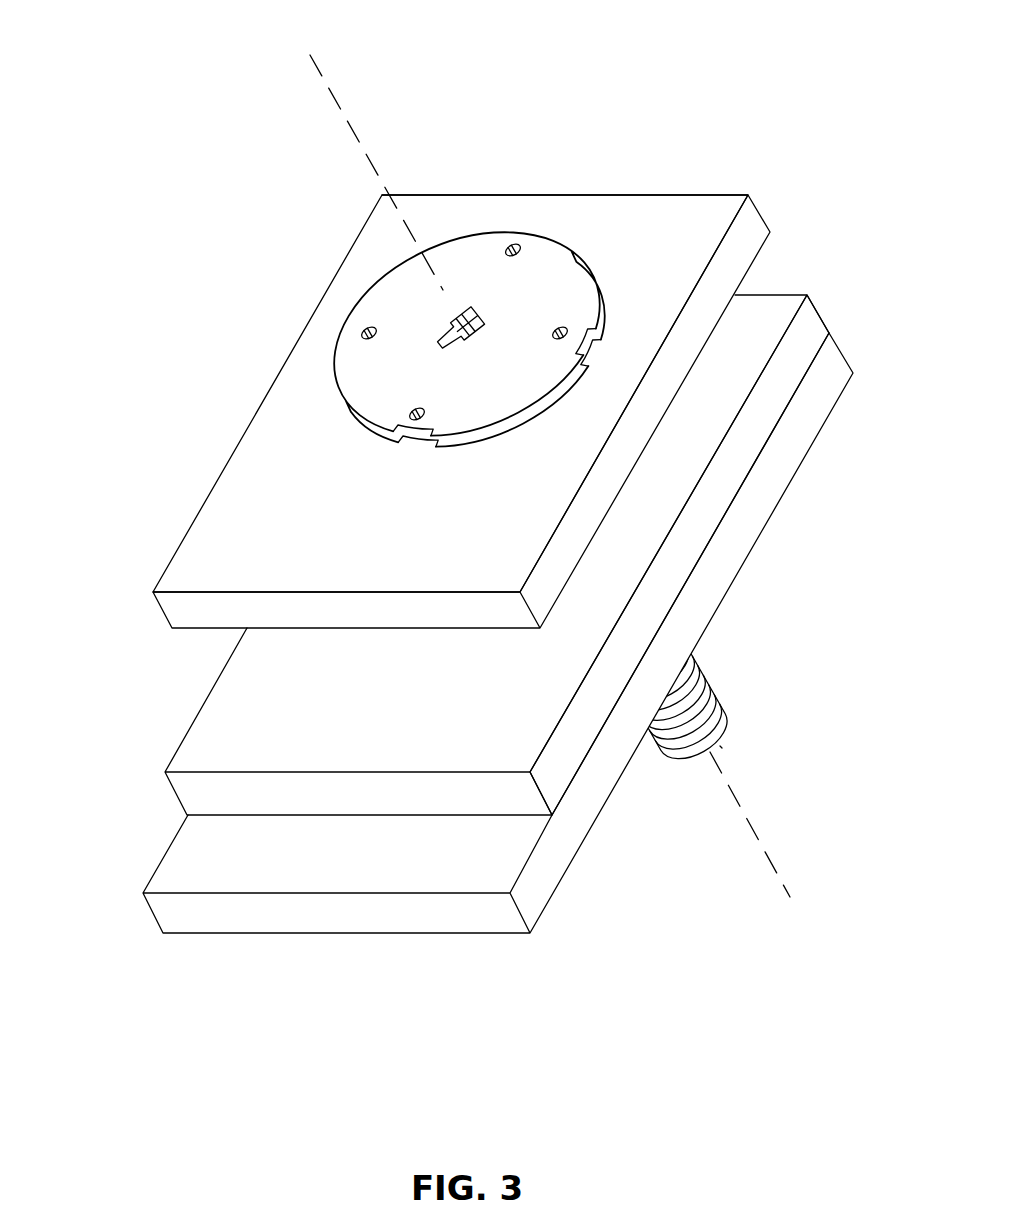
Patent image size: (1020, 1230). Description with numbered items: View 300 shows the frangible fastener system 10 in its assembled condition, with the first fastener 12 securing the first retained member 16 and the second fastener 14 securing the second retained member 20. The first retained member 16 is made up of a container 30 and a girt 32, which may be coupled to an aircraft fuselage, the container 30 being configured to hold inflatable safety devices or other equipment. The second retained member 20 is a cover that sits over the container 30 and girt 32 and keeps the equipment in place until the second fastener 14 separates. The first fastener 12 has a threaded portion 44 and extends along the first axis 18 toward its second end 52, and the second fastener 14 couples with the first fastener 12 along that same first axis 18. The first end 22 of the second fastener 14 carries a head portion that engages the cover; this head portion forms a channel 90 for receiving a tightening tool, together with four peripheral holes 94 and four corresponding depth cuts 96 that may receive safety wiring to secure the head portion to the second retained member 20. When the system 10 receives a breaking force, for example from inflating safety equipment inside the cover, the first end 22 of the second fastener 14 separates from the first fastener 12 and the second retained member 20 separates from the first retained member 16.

The frangible fastener system 10 is at (823, 96).
The first fastener 12 is at (710, 676).
The second fastener 14 is at (547, 268).
The first retained member 16 is at (843, 332).
The first axis 18 is at (790, 896).
The second retained member 20 is at (764, 206).
The first end 22 is at (463, 258).
The container 30 is at (530, 877).
The girt 32 is at (553, 770).
The threaded portion 44 is at (668, 753).
The second end 52 is at (724, 749).
The channel 90 is at (447, 319).
The peripheral holes 94 is at (513, 238).
The depth cuts 96 is at (593, 335).
The view 300 is at (136, 332).